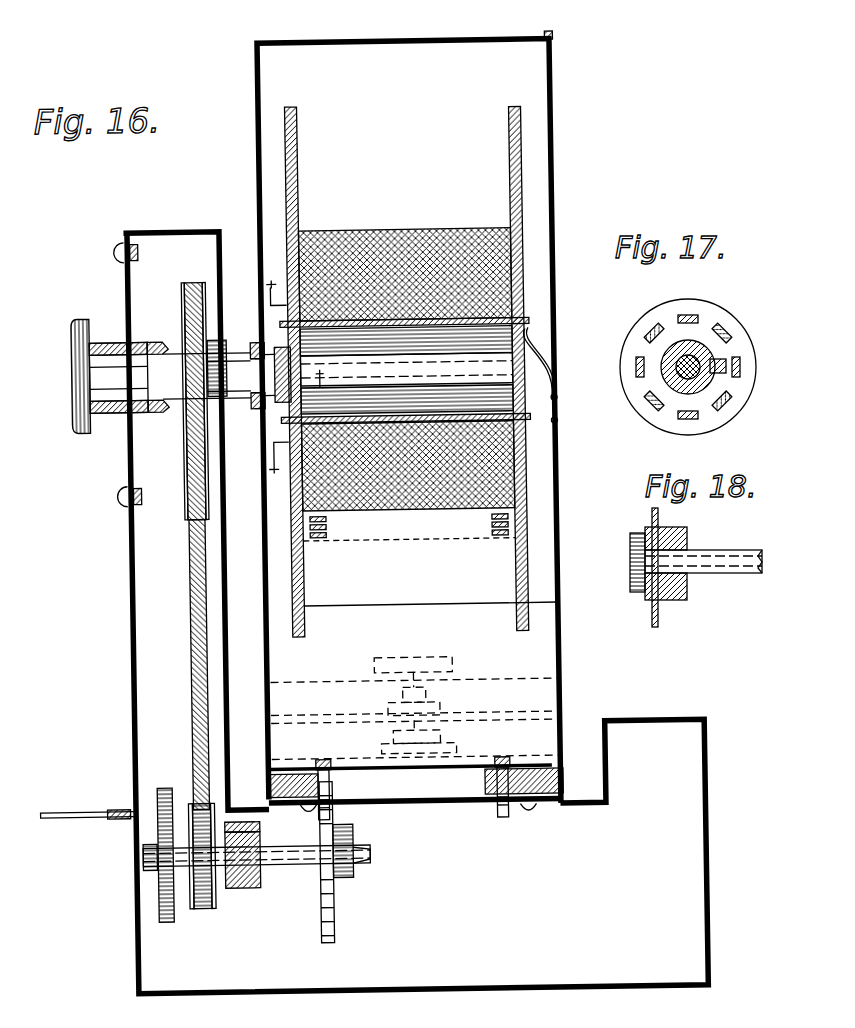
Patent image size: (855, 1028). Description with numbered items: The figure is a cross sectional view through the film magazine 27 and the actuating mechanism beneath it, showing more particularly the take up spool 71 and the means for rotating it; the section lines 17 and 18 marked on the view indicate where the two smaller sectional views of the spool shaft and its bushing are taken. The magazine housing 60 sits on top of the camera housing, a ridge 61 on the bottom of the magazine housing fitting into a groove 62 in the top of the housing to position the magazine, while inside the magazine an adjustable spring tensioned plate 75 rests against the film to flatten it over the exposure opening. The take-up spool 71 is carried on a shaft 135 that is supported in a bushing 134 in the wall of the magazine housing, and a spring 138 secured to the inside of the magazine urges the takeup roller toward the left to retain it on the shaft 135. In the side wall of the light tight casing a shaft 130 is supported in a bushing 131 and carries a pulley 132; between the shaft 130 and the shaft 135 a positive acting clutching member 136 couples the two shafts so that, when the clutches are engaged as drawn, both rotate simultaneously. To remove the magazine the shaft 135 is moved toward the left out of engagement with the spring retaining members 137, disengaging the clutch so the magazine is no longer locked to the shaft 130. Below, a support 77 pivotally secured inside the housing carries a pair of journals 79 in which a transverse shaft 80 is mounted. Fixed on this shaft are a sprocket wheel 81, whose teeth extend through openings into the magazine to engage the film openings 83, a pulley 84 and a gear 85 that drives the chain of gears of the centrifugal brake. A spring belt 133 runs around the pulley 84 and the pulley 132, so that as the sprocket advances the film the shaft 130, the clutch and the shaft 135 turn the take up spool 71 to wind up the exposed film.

In FIG. 16, the magazine housing 60 is at (268, 39).
In FIG. 16, the magazine 27 is at (567, 62).
In FIG. 16, the take-up spool 71 is at (514, 128).
In FIG. 16, the section line 17— 17 is at (277, 380).
In FIG. 16, the section line 18— 18 is at (330, 376).
In FIG. 16, the pulley 132 is at (189, 292).
In FIG. 16, the spring retaining members 137 is at (153, 337).
In FIG. 16, the shaft 130 is at (108, 414).
In FIG. 16, the bushing 131 is at (125, 466).
In FIG. 16, the clutching member 136 is at (258, 338).
In FIG. 18, the clutching member 136 is at (637, 533).
In FIG. 16, the bushing 134 is at (262, 410).
In FIG. 18, the bushing 134 is at (666, 600).
In FIG. 16, the shaft 135 is at (430, 372).
In FIG. 17, the shaft 135 is at (712, 355).
In FIG. 18, the shaft 135 is at (750, 550).
In FIG. 16, the spring 138 is at (547, 352).
In FIG. 16, the spring belt 133 is at (188, 607).
In FIG. 16, the ridge 61 is at (266, 778).
In FIG. 16, the journals 79 is at (247, 818).
In FIG. 16, the groove 62 is at (300, 811).
In FIG. 16, the film openings 83 is at (320, 758).
In FIG. 16, the spring tensioned plate 75 is at (452, 757).
In FIG. 16, the transverse shaft 80 is at (366, 860).
In FIG. 16, the sprocket wheel 81 is at (331, 915).
In FIG. 16, the support 77 is at (255, 888).
In FIG. 16, the pulley 84 is at (205, 905).
In FIG. 16, the gear 85 is at (156, 900).